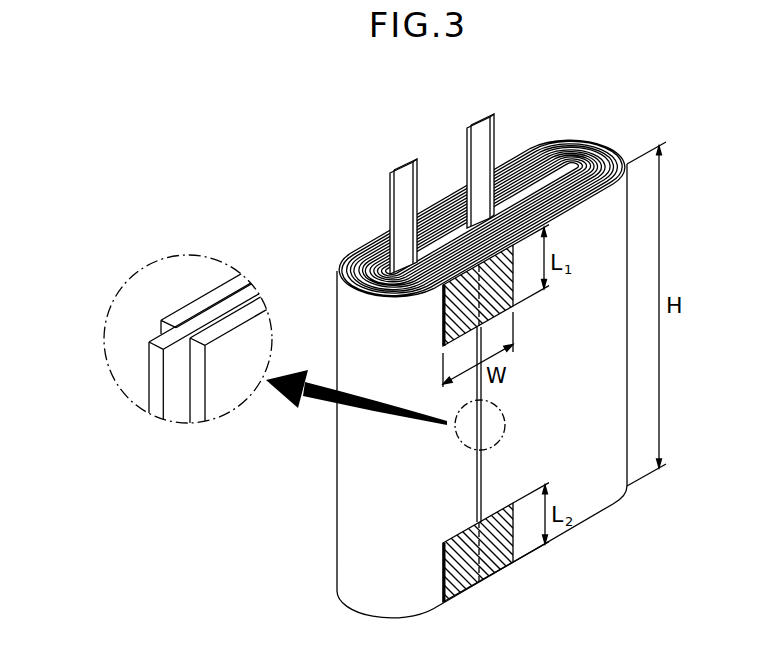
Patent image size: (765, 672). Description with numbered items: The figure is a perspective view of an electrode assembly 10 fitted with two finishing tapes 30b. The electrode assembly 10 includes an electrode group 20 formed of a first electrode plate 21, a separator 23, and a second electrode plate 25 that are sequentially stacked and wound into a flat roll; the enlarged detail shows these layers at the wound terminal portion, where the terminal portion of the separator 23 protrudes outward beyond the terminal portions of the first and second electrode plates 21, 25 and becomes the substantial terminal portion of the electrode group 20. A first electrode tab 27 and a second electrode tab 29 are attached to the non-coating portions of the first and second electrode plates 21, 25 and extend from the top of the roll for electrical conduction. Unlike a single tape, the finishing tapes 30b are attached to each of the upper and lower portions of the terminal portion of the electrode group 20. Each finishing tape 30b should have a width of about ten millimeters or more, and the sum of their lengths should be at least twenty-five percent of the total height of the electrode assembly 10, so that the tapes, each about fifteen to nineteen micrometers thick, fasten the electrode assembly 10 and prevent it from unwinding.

The electrode assembly 10 is at (336, 251).
The electrode group 20 is at (617, 140).
The first electrode plate 21 is at (228, 400).
The separator 23 is at (218, 312).
The second electrode plate 25 is at (172, 312).
The first electrode tab 27 is at (403, 162).
The second electrode tab 29 is at (478, 118).
The finishing tape 30b is at (470, 590).